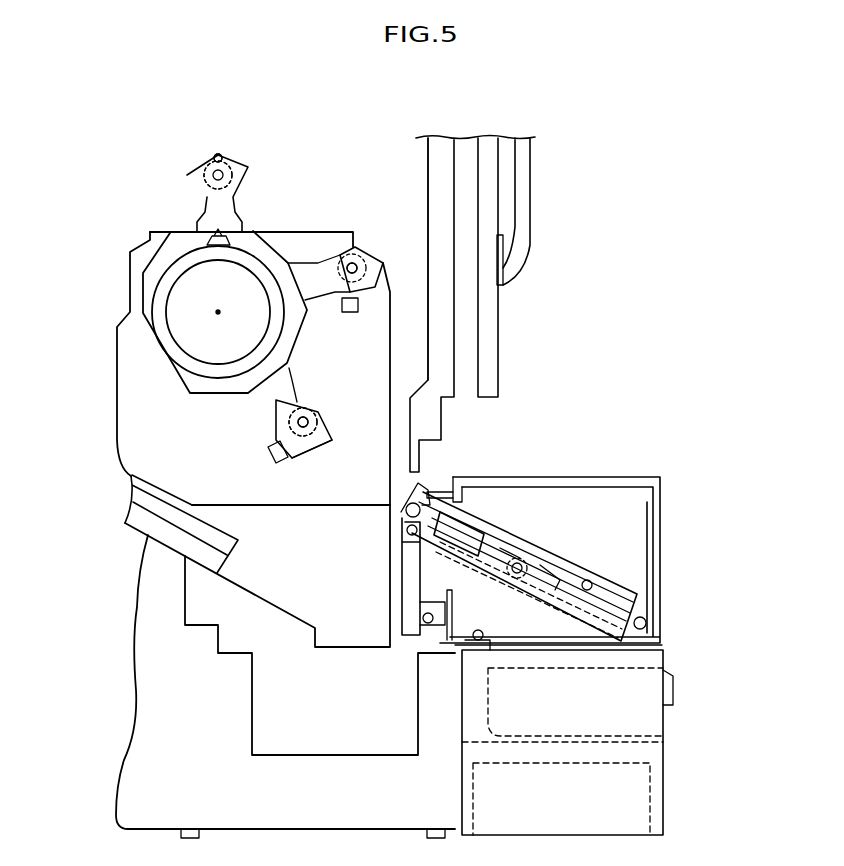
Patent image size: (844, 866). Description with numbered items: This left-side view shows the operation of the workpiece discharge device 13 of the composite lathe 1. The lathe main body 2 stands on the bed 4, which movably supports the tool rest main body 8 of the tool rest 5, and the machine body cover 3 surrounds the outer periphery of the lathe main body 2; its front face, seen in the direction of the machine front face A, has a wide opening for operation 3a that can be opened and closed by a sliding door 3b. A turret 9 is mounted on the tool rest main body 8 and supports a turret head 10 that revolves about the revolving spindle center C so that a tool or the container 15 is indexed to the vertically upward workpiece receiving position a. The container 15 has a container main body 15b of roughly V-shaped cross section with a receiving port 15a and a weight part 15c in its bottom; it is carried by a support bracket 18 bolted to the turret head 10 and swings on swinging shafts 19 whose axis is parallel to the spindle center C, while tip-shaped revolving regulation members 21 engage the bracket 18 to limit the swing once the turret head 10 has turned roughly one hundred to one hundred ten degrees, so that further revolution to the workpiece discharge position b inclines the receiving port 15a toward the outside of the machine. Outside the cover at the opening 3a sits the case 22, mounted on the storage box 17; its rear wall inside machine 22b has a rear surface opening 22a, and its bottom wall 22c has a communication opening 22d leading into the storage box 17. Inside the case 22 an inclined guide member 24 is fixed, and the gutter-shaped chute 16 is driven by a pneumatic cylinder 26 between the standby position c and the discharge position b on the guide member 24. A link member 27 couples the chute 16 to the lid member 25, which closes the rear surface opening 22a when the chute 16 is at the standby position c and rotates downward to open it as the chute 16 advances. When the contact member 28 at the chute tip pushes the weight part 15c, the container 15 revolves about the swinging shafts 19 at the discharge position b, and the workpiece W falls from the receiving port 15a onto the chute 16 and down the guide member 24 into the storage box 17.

The composite lathe 1 is at (102, 88).
The lathe main body 2 is at (48, 455).
The machine body cover 3 is at (425, 160).
The opening for operation 3a is at (436, 185).
The sliding door 3b is at (505, 312).
The bed 4 is at (135, 605).
The tool rest 5 is at (116, 436).
The tool rest main body 8 is at (153, 233).
The turret 9 is at (138, 272).
The turret head 10 is at (130, 291).
The workpiece discharge device 13 is at (587, 384).
The container 15 is at (204, 165).
The receiving port 15a is at (376, 258).
The container main body 15b is at (312, 452).
The weight part 15c is at (285, 470).
The chute 16 is at (503, 525).
The storage box 17 is at (678, 680).
The support bracket 18 is at (282, 242).
The swinging shaft 19 is at (306, 405).
The revolving regulation member 21 is at (330, 418).
The case 22 is at (663, 490).
The rear surface opening 22a is at (468, 485).
The rear wall inside machine 22b is at (432, 660).
The bottom wall 22c is at (645, 618).
The communication opening 22d is at (562, 638).
The guide member 24 is at (520, 640).
The lid member 25 is at (400, 560).
The pneumatic cylinder 26 is at (600, 598).
The link member 27 is at (545, 560).
The contact member 28 is at (405, 515).
The workpiece receiving position a is at (219, 150).
The workpiece discharge position b is at (378, 405).
The standby position c is at (555, 520).
The machine front face A is at (738, 327).
The revolving spindle center C is at (220, 313).
The workpiece W is at (248, 168).